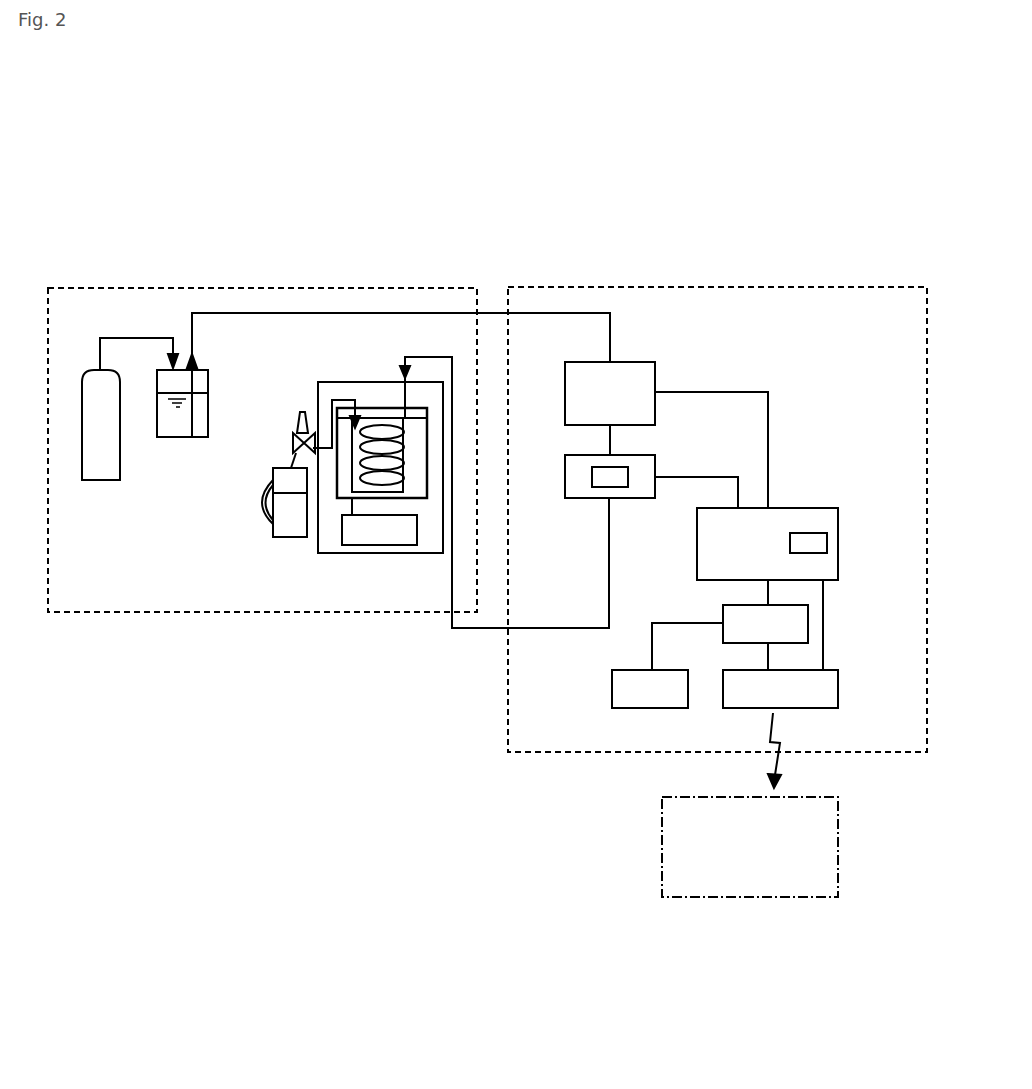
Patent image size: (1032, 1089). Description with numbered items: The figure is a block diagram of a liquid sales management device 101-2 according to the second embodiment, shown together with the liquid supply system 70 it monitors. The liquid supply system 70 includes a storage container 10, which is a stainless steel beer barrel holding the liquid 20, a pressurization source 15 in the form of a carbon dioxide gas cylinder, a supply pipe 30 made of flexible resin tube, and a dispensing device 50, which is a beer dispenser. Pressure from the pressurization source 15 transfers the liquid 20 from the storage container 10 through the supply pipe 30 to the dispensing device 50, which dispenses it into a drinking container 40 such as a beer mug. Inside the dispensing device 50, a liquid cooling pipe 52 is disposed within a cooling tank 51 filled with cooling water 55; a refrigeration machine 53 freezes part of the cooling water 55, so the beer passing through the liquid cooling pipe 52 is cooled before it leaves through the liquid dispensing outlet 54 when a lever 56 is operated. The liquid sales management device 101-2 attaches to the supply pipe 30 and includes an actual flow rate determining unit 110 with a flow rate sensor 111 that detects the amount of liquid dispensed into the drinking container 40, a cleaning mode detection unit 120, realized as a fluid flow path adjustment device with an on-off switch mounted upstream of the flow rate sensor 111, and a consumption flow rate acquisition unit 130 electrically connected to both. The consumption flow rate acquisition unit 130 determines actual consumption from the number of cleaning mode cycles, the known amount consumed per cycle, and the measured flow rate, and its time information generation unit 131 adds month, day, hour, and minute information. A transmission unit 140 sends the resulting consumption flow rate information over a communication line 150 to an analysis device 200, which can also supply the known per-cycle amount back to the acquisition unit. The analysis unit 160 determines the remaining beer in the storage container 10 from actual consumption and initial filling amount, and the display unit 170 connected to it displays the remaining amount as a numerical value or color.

The storage container 10 is at (183, 438).
The pressurization source 15 is at (100, 482).
The liquid 20 is at (208, 418).
The supply pipe 30 is at (256, 316).
The drinking container 40 is at (283, 538).
The dispensing device 50 is at (340, 382).
The cooling tank 51 is at (428, 465).
The liquid cooling pipe 52 is at (406, 472).
The refrigeration machine 53 is at (367, 545).
The liquid dispensing outlet 54 is at (296, 464).
The cooling water 55 is at (343, 462).
The lever 56 is at (300, 410).
The liquid supply system 70 is at (166, 613).
The liquid sales management device 101-2 is at (750, 286).
The actual flow rate determining unit 110 is at (655, 455).
The flow rate sensor 111 is at (598, 499).
The cleaning mode detection unit 120 is at (655, 362).
The consumption flow rate acquisition unit 130 is at (813, 507).
The time information generation unit 131 is at (827, 543).
The transmission unit 140 is at (838, 685).
The communication line 150 is at (770, 728).
The analysis unit 160 is at (723, 620).
The display unit 170 is at (610, 688).
The analysis device 200 is at (662, 826).